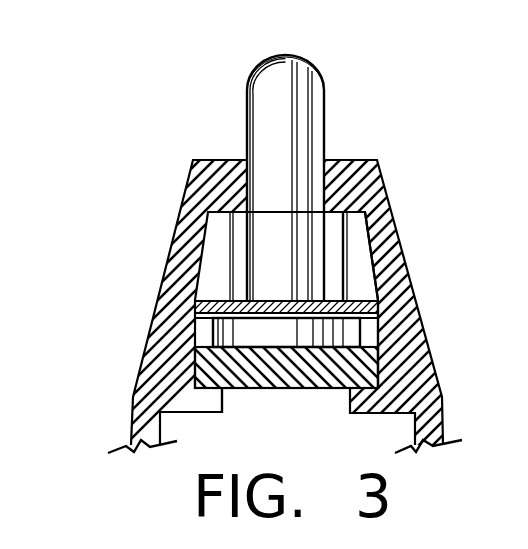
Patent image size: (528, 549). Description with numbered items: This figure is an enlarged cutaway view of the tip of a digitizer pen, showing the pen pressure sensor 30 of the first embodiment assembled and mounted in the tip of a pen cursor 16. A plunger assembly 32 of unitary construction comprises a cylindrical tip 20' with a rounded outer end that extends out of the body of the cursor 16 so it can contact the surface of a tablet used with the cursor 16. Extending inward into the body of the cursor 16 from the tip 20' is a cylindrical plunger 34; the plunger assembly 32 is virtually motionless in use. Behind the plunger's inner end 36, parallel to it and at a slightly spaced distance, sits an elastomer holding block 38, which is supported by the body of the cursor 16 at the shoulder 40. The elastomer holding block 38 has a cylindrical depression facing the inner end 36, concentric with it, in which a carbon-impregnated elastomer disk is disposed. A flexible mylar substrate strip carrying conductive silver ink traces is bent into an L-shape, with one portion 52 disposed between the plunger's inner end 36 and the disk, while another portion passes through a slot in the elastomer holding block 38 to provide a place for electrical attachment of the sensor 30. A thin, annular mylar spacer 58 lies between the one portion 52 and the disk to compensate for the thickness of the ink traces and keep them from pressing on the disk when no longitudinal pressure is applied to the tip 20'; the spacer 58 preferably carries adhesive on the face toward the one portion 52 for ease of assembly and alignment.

The pen cursor 16 is at (143, 369).
The cylindrical tip 20' is at (245, 81).
The pen pressure sensor 30 is at (392, 137).
The plunger assembly 32 is at (338, 121).
The cylindrical plunger 34 is at (342, 250).
The plunger inner end 36 is at (280, 300).
The elastomer holding block 38 is at (380, 357).
The shoulder 40 is at (222, 406).
The one portion of the substrate strip 52 is at (397, 278).
The mylar spacer 58 is at (197, 307).